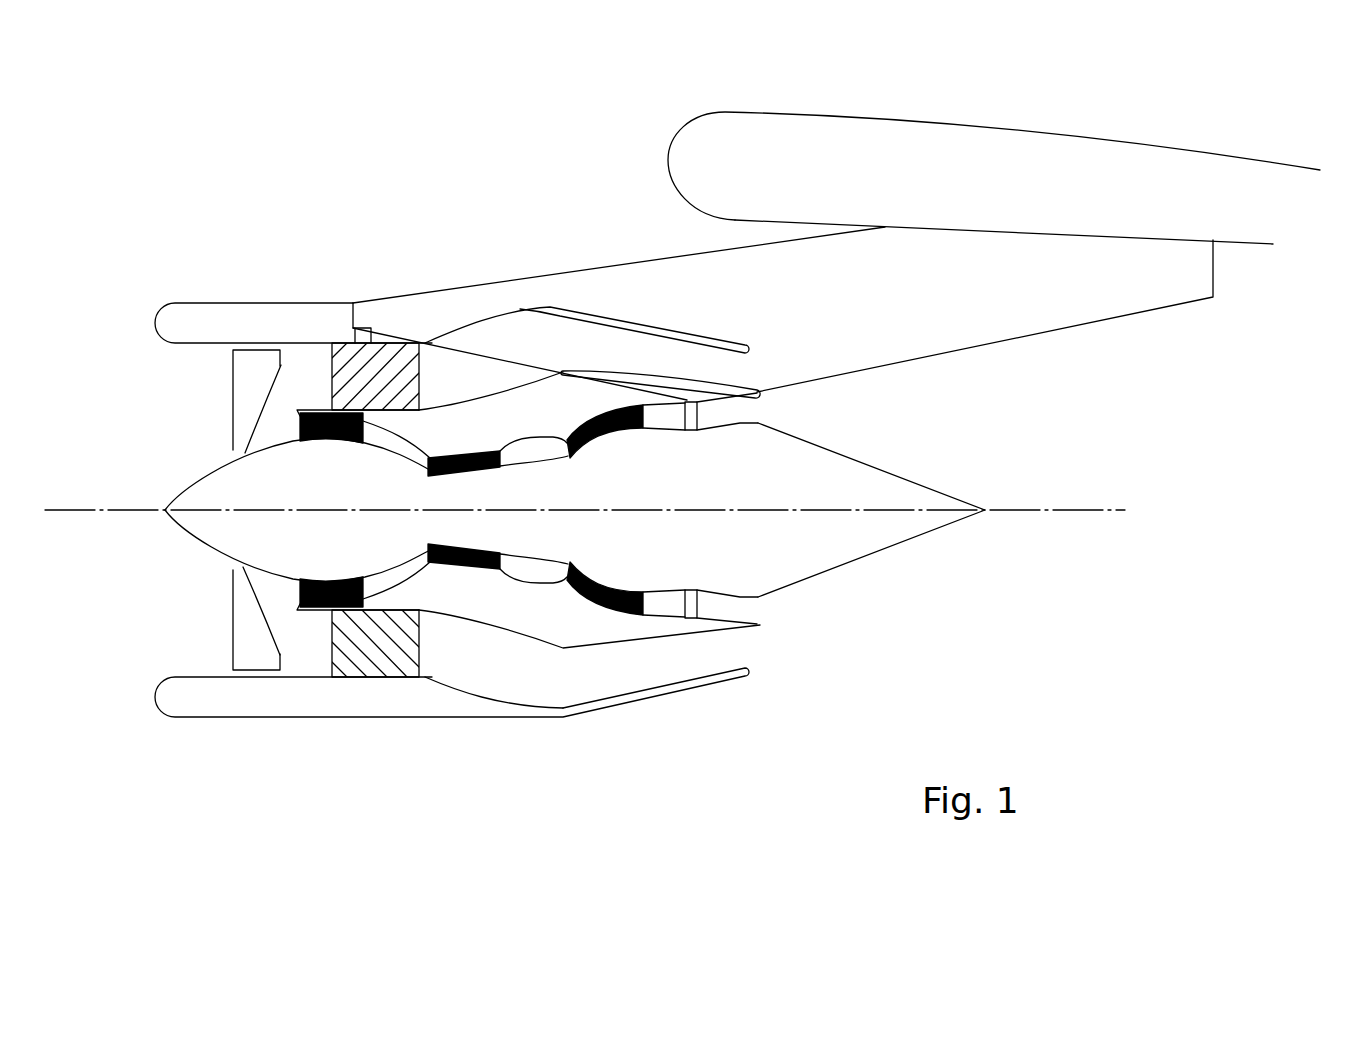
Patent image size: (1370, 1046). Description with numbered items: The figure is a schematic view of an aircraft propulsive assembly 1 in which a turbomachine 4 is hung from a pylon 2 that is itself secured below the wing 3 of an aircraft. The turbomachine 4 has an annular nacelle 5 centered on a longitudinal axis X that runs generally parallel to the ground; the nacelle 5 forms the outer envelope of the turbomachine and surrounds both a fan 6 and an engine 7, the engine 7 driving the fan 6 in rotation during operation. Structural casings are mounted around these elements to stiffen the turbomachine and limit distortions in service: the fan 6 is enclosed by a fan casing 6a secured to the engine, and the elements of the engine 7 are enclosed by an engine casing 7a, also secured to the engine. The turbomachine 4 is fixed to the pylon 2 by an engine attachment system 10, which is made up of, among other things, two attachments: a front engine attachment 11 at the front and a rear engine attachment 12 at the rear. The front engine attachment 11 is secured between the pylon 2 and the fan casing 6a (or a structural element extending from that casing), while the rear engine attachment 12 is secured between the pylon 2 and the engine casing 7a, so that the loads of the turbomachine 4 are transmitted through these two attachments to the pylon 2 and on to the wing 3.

The aircraft propulsive assembly 1 is at (218, 178).
The pylon 2 is at (1003, 297).
The wing 3 is at (1077, 175).
The turbomachine 4 is at (188, 748).
The annular nacelle 5 is at (223, 317).
The fan 6 is at (242, 398).
The fan casing 6a is at (283, 362).
The engine 7 is at (850, 540).
The engine casing 7a is at (735, 420).
The engine attachment system 10 is at (572, 333).
The front engine attachment 11 is at (365, 343).
The rear engine attachment 12 is at (688, 400).
The longitudinal axis X is at (1063, 510).